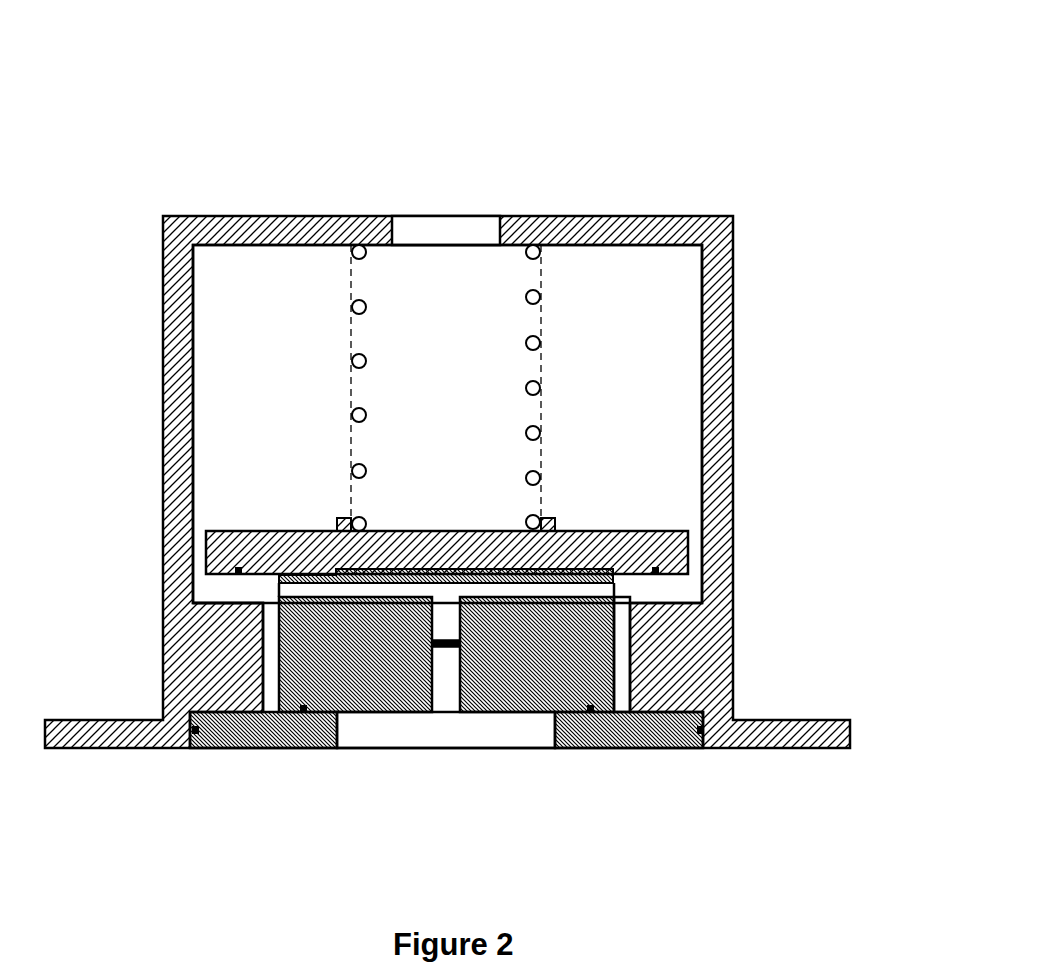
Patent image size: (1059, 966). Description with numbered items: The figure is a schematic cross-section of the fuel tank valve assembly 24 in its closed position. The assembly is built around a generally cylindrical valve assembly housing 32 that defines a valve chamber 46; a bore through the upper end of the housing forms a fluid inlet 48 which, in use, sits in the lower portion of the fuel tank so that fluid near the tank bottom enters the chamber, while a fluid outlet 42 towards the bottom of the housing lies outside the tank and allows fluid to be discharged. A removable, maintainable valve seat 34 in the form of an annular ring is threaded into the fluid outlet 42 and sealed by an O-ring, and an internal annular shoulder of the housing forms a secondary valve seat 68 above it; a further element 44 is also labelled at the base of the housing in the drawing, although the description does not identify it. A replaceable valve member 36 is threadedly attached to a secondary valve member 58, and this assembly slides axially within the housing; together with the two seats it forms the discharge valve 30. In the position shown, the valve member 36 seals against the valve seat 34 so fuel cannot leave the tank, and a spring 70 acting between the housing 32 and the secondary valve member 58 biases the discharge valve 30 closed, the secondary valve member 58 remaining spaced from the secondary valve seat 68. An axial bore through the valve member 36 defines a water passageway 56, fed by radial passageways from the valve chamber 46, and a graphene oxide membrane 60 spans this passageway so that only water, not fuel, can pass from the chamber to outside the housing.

The fuel tank valve assembly 24 is at (447, 417).
The discharge valve 30 is at (628, 668).
The valve assembly housing 32 is at (720, 383).
The valve seat 34 is at (237, 737).
The valve member 36 is at (517, 681).
The fluid outlet 42 is at (386, 736).
The second support pad 44 is at (702, 748).
The valve chamber 46 is at (665, 284).
The fluid inlet 48 is at (430, 230).
The water passageway 56 is at (440, 619).
The secondary valve member 58 is at (668, 541).
The graphene oxide membrane 60 is at (455, 648).
The secondary valve seat 68 is at (213, 606).
The spring 70 is at (542, 296).